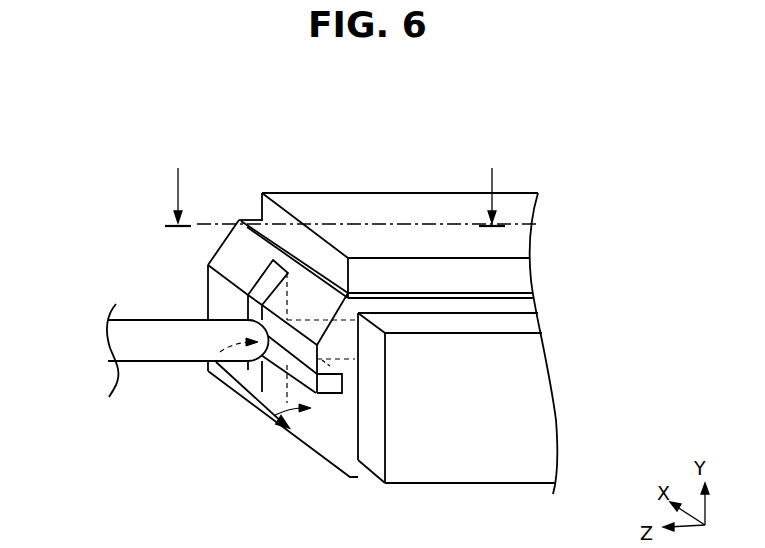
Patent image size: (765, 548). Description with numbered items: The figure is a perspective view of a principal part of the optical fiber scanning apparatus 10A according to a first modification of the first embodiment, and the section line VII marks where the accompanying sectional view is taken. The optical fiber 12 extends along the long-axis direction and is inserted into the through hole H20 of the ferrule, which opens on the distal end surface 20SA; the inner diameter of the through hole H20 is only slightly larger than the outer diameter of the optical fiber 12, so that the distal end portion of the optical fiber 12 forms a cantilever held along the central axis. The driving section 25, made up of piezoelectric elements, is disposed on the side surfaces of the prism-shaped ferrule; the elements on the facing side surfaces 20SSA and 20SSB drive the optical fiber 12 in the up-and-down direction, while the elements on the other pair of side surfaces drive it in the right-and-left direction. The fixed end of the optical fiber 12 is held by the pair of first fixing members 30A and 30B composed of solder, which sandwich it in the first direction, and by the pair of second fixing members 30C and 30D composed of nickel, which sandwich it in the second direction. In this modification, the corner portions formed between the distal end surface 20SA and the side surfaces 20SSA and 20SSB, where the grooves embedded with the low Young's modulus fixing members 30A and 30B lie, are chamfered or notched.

The optical fiber scanning apparatus 10A is at (108, 158).
The optical fiber 12 is at (168, 362).
The driving section 25 is at (445, 192).
The side surface 20SSA is at (293, 256).
The distal end surface 20SA is at (290, 412).
The side surface 20SSB is at (363, 480).
The first fixing member 30A is at (258, 282).
The first fixing member 30B is at (262, 420).
The second fixing member 30C is at (207, 305).
The second fixing member 30D is at (330, 396).
The through hole H20 is at (222, 361).
The section line VII- VII is at (335, 185).